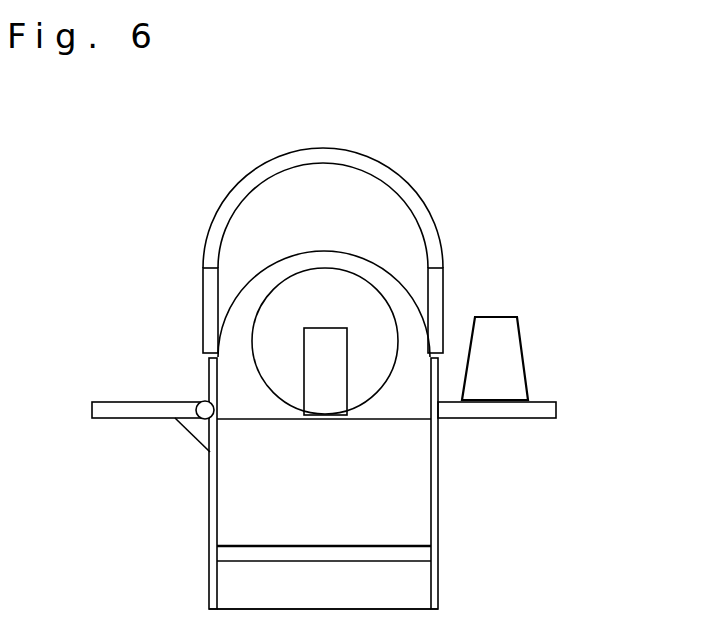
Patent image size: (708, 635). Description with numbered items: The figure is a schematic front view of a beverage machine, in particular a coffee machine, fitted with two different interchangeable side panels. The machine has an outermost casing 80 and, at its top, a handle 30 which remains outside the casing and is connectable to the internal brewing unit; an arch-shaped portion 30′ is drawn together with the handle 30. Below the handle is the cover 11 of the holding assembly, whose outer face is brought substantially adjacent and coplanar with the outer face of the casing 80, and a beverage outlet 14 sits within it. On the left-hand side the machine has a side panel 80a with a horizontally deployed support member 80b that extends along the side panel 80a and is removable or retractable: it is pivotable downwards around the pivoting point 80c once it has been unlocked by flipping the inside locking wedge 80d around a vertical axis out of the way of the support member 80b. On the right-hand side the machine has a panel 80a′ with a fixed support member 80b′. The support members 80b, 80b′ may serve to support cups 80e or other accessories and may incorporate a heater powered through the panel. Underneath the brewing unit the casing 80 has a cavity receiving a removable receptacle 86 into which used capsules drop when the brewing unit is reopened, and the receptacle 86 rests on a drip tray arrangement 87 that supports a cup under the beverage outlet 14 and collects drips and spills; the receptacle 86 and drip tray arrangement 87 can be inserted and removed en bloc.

The handle 30 is at (440, 185).
The arch strap 30′ is at (287, 157).
The outermost casing 80 is at (298, 252).
The side panel 80a is at (210, 492).
The panel 80a′ is at (432, 450).
The support member 80b is at (115, 407).
The fixed support member 80b′ is at (545, 410).
The pivoting point 80c is at (202, 403).
The locking wedge 80d is at (190, 435).
The cup 80e is at (503, 373).
The cover 11 is at (325, 341).
The beverage outlet 14 is at (315, 377).
The removable receptacle 86 is at (324, 482).
The drip tray arrangement 87 is at (324, 585).